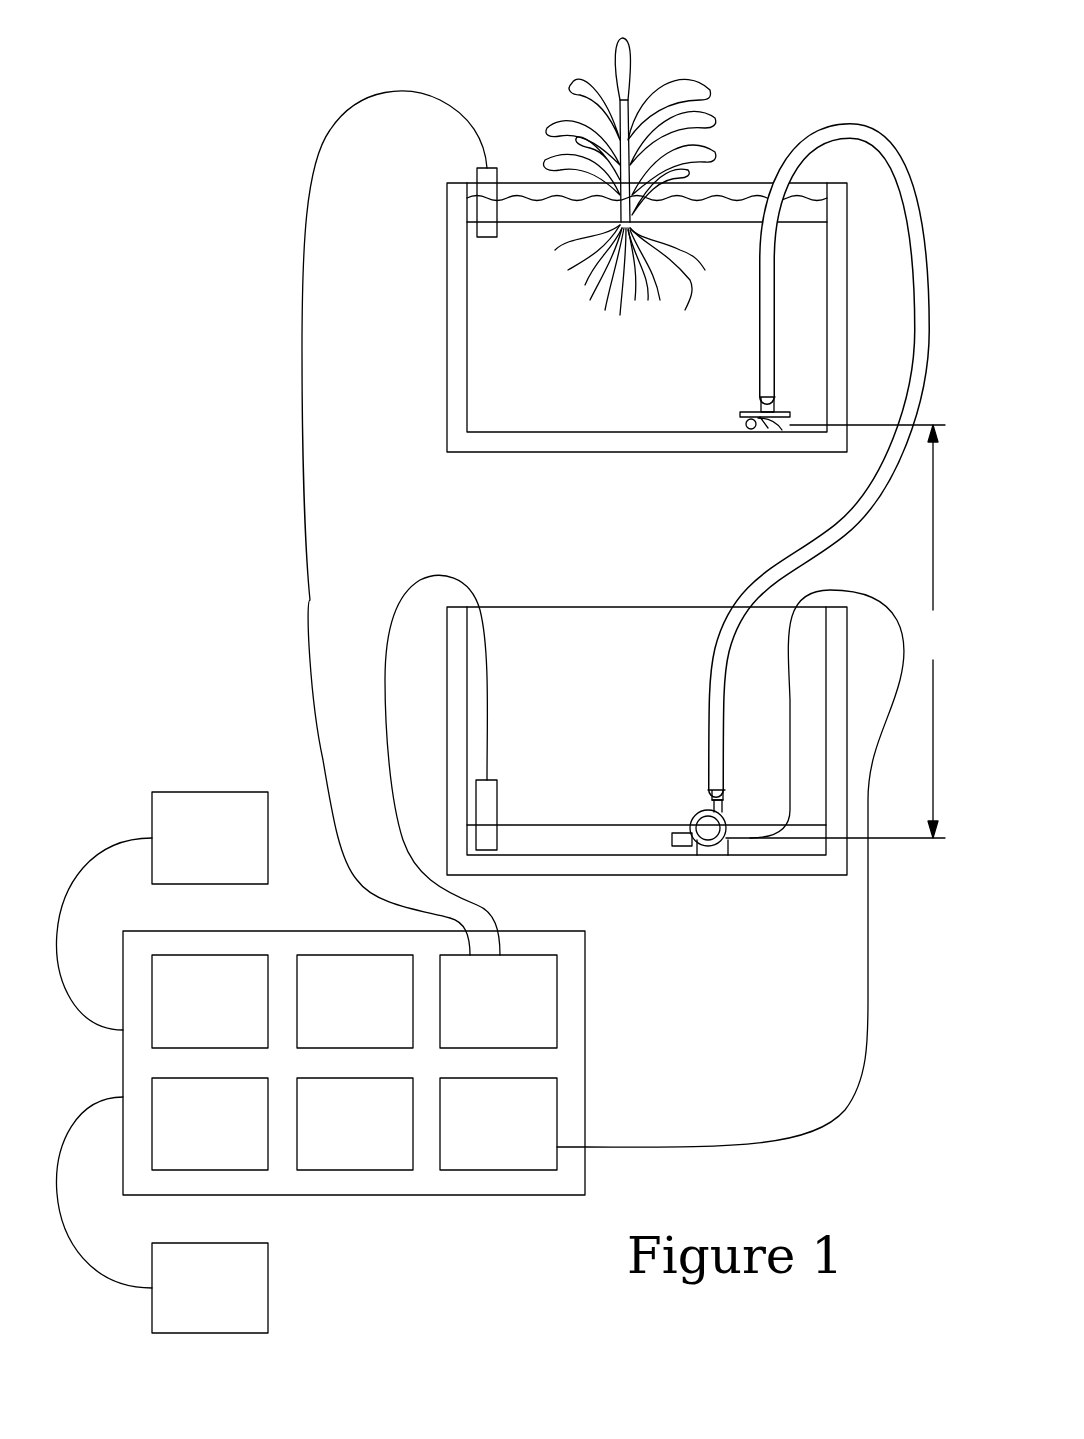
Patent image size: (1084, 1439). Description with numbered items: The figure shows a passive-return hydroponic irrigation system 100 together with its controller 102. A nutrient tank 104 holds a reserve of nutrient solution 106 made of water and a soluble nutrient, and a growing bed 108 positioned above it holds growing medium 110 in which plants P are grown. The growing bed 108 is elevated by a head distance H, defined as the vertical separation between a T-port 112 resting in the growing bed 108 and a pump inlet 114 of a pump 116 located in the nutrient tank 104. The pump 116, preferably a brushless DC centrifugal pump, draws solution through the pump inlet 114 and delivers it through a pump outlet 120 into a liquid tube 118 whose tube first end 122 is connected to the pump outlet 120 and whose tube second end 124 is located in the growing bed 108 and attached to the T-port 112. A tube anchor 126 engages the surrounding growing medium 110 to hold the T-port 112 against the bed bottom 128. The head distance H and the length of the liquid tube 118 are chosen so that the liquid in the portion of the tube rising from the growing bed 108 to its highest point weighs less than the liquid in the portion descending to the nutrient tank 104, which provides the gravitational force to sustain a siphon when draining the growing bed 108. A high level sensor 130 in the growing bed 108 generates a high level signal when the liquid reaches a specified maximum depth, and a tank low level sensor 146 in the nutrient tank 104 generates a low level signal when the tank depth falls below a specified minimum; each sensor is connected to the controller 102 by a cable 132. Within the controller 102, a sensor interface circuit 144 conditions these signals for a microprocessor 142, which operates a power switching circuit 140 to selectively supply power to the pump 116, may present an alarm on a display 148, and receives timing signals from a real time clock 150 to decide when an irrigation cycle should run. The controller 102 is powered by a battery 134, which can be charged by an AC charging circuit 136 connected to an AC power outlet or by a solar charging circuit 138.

The hydroponic irrigation system 100 is at (240, 173).
The plants P is at (689, 90).
The controller 102 is at (415, 1196).
The nutrient tank 104 is at (780, 868).
The nutrient solution 106 is at (598, 823).
The growing bed 108 is at (452, 327).
The growing medium 110 is at (738, 213).
The T-port 112 is at (763, 430).
The pump inlet 114 is at (678, 846).
The pump 116 is at (717, 860).
The liquid tube 118 is at (755, 560).
The pump outlet 120 is at (717, 798).
The tube first end 122 is at (712, 790).
The tube second end 124 is at (763, 382).
The tube anchor 126 is at (747, 415).
The bed bottom 128 is at (602, 432).
The high level sensor 130 is at (487, 205).
The cable 132 is at (383, 677).
The battery 134 is at (355, 1124).
The AC charging circuit 136 is at (162, 1215).
The solar charging circuit 138 is at (162, 911).
The power switching circuit 140 is at (498, 1124).
The microprocessor 142 is at (210, 1001).
The sensor interface circuit 144 is at (498, 1001).
The tank low level sensor 146 is at (487, 795).
The display 148 is at (355, 1001).
The real time clock 150 is at (210, 1124).
The head distance H is at (835, 631).